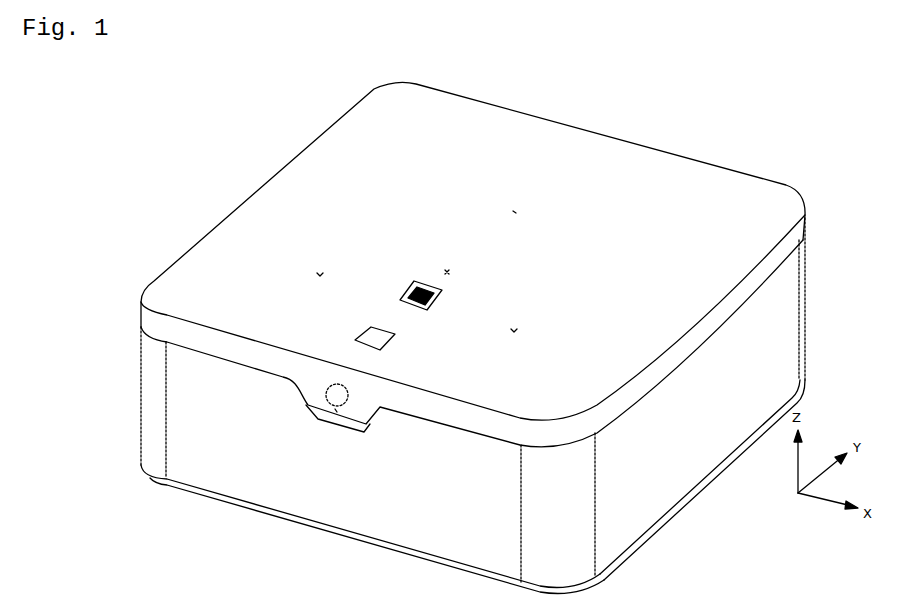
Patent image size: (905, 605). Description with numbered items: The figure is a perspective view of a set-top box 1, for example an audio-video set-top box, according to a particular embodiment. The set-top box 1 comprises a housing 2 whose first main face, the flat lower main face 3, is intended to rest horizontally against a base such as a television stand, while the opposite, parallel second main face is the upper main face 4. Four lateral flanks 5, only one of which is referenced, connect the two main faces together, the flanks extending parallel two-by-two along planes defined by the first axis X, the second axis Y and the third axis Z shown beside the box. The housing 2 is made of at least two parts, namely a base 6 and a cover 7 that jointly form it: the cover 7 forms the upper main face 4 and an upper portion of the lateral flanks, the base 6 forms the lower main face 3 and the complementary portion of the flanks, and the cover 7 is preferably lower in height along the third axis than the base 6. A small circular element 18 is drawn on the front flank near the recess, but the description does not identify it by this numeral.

The set-top box 1 is at (190, 188).
The housing 2 is at (150, 482).
The lower main face 3 is at (718, 474).
The upper main face 4 is at (708, 178).
The lateral flank 5 is at (347, 515).
The base 6 is at (468, 494).
The cover 7 is at (468, 413).
The operation button 18 is at (330, 387).